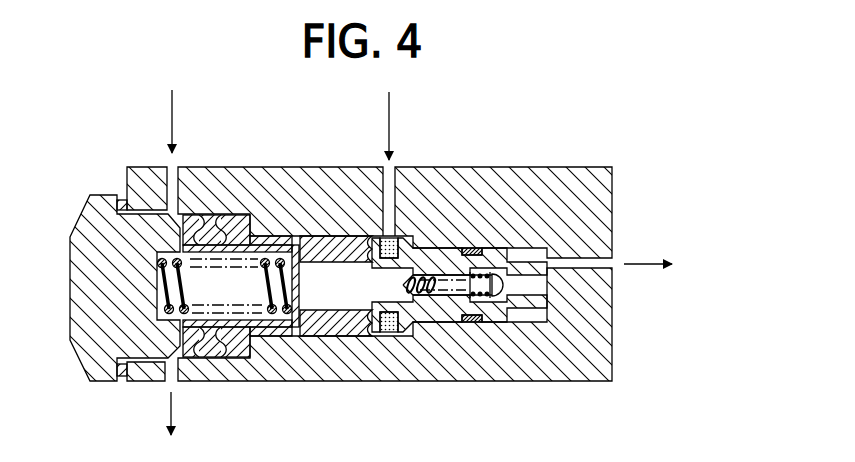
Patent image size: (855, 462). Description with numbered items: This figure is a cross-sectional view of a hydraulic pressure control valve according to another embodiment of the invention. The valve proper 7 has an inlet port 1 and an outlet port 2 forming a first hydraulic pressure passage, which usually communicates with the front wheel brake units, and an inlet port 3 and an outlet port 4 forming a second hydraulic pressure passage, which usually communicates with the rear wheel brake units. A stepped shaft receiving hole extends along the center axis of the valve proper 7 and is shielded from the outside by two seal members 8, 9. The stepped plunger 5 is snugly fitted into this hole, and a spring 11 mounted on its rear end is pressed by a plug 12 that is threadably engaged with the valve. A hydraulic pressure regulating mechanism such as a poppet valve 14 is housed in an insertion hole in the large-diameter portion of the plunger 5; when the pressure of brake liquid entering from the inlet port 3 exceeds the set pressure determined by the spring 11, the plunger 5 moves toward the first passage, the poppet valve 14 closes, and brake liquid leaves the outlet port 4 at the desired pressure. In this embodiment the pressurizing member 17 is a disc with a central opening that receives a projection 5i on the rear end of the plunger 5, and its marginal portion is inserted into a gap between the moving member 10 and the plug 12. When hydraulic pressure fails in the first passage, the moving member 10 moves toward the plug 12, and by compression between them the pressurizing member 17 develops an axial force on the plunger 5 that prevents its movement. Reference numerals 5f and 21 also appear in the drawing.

The inlet port 1 is at (173, 170).
The outlet port 2 is at (172, 378).
The inlet port 3 is at (390, 170).
The outlet port 4 is at (608, 265).
The plunger 5 is at (445, 250).
The annular groove of valve member 5f is at (478, 324).
The projection 5i is at (296, 335).
The valve proper 7 is at (568, 355).
The seal member 8 is at (350, 337).
The seal member 9 is at (217, 358).
The moving member 10 is at (238, 223).
The spring 11 is at (160, 366).
The plug 12 is at (107, 240).
The poppet valve 14 is at (500, 274).
The pressurizing member 17 is at (311, 235).
The seal 21 is at (512, 252).